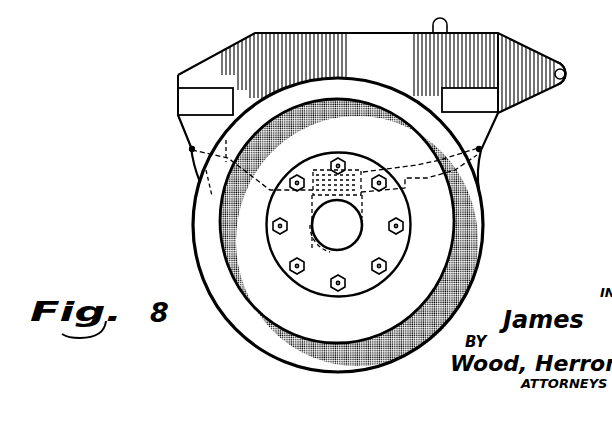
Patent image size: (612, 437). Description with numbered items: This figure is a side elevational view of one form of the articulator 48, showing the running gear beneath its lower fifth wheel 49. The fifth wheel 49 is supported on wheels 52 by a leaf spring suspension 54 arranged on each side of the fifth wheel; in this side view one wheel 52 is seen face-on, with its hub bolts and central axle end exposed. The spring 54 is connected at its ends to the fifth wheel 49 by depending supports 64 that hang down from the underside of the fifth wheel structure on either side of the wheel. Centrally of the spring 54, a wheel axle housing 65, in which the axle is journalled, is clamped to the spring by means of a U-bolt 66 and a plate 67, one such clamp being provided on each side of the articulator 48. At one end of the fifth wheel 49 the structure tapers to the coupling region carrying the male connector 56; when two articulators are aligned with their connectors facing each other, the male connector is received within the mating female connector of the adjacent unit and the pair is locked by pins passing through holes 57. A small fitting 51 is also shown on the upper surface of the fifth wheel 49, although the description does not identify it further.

The articulator 48 is at (141, 100).
The fifth wheel 49 is at (364, 33).
The lubrication fitting 51 is at (447, 24).
The wheels 52 is at (484, 209).
The leaf spring suspensions 54 is at (425, 185).
The male connector 56 is at (557, 67).
The holes 57 is at (561, 81).
The depending supports 64 is at (338, 152).
The wheel axle housing 65 is at (337, 226).
The U-bolt 66 is at (365, 210).
The plate 67 is at (366, 170).